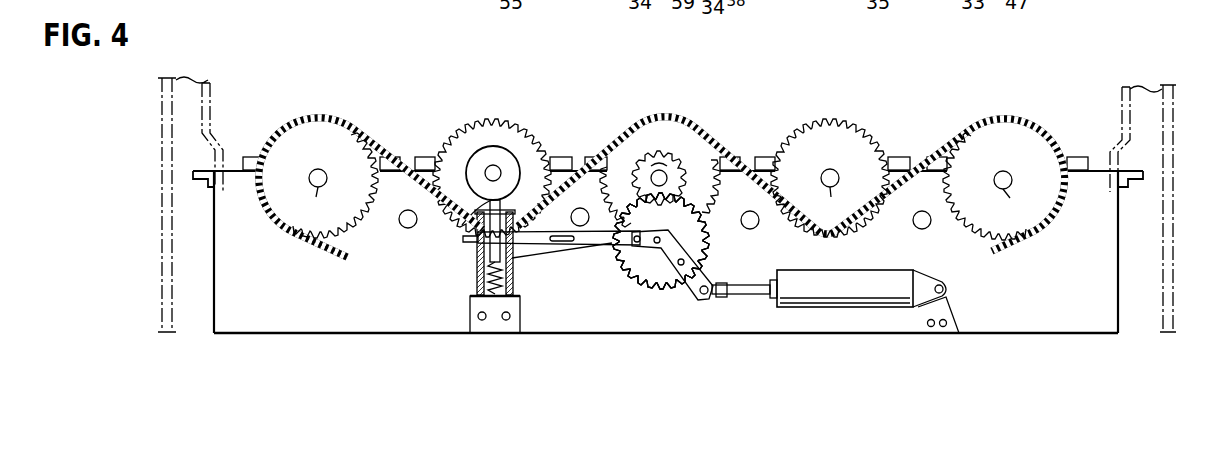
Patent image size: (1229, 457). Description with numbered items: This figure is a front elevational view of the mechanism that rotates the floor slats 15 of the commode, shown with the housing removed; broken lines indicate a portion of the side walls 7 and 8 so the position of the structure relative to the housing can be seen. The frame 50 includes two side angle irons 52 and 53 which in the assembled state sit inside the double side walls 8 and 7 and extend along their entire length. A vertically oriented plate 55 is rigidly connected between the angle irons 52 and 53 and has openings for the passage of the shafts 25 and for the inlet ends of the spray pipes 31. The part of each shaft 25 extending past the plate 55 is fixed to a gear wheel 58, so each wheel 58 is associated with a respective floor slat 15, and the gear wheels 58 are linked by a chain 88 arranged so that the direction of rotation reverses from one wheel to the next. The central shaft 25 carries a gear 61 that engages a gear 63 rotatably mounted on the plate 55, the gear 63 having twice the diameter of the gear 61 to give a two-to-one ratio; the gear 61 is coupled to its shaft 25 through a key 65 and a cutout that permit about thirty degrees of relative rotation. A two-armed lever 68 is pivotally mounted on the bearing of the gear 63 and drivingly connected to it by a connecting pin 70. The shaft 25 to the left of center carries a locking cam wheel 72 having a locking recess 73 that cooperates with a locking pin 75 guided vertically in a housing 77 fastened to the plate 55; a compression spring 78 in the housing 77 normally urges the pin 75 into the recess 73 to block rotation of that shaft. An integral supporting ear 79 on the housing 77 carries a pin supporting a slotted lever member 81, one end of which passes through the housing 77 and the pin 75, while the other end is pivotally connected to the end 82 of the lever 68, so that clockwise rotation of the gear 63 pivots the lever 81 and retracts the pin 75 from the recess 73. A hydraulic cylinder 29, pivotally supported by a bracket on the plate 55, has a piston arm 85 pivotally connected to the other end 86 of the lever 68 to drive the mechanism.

The side wall 7 is at (1172, 136).
The side wall 8 is at (160, 130).
The floor slats 15 is at (422, 160).
The shafts 25 is at (722, 196).
The hydraulic cylinder 29 is at (831, 292).
The spray pipes 31 is at (405, 222).
The frame 50 is at (1022, 335).
The side angle iron 52 is at (192, 178).
The side angle iron 53 is at (1133, 187).
The plate 55 is at (258, 313).
The gear wheel 58 is at (305, 145).
The gear 61 is at (683, 165).
The gear 63 is at (688, 237).
The key 65 is at (657, 164).
The two-armed lever 68 is at (665, 250).
The connecting pin 70 is at (695, 261).
The locking cam wheel 72 is at (478, 163).
The locking recess 73 is at (516, 186).
The locking pin 75 is at (478, 208).
The housing 77 is at (514, 282).
The compression spring 78 is at (478, 281).
The supporting ear 79 is at (527, 251).
The lever member 81 is at (592, 244).
The end of lever 82 is at (632, 256).
The piston arm 85 is at (745, 297).
The end of lever 86 is at (706, 302).
The chain 88 is at (326, 250).